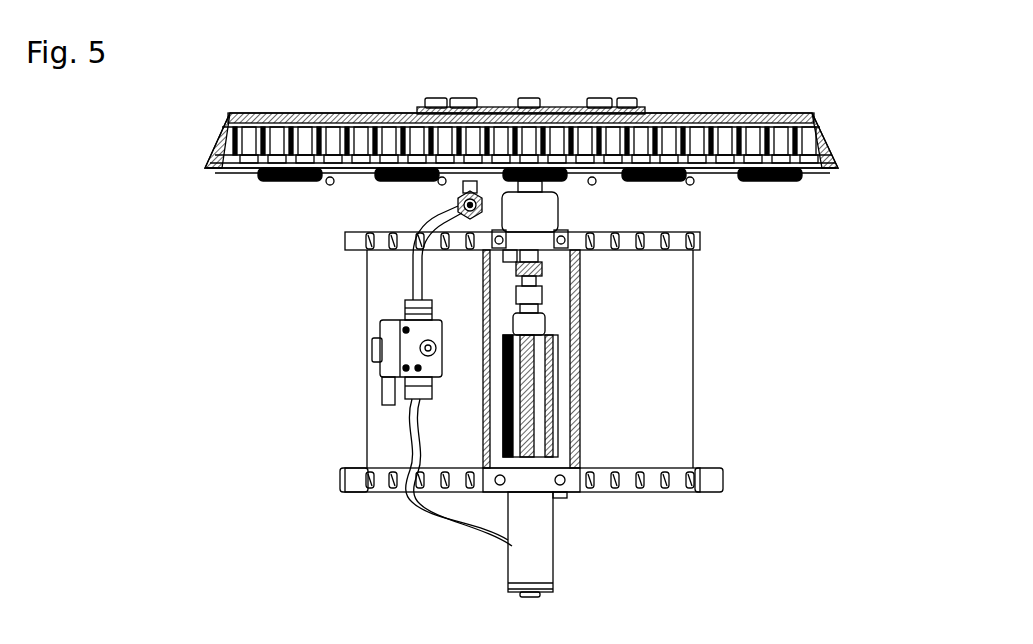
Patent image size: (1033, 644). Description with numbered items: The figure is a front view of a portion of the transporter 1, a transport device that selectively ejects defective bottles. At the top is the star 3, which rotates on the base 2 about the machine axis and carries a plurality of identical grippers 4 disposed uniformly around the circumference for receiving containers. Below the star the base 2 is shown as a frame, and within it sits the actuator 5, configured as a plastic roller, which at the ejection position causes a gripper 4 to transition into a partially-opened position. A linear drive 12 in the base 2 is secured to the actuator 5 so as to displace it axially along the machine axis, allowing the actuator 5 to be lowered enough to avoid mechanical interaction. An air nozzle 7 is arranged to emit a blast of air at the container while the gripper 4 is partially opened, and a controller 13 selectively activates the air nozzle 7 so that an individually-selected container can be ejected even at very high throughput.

The transporter 1 is at (728, 66).
The base 2 is at (726, 345).
The star 3 is at (850, 138).
The grippers 4 is at (775, 198).
The actuator 5 is at (535, 190).
The air nozzle 7 is at (457, 200).
The linear drive 12 is at (535, 523).
The controller 13 is at (397, 358).